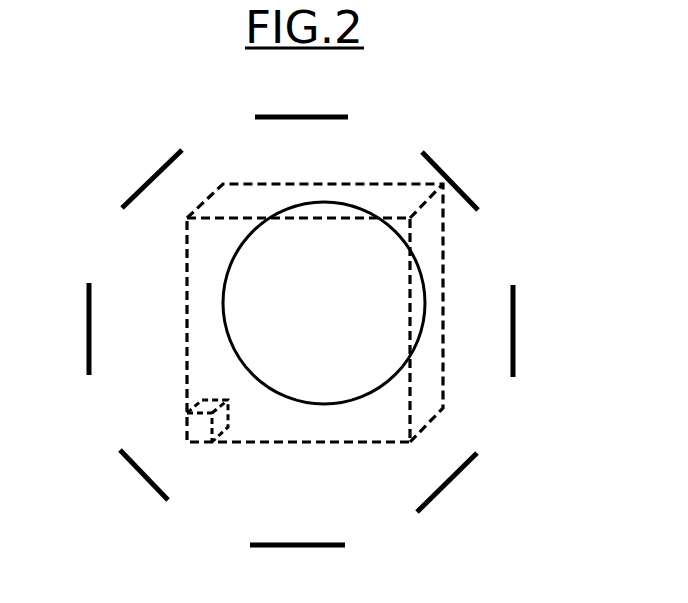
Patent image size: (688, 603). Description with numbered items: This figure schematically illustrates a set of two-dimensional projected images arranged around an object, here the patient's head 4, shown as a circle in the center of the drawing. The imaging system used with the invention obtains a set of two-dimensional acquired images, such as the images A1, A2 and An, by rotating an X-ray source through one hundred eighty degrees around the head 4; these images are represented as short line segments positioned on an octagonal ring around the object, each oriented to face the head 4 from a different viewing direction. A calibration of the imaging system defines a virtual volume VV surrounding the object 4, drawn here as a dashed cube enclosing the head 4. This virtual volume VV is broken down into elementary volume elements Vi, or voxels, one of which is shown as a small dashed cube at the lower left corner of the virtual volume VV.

The acquired image An is at (328, 119).
The acquired image A1 is at (476, 209).
The acquired image A2 is at (513, 376).
The virtual volume VV is at (186, 372).
The elementary volume element Vi is at (202, 431).
The patient's head 4 is at (304, 340).